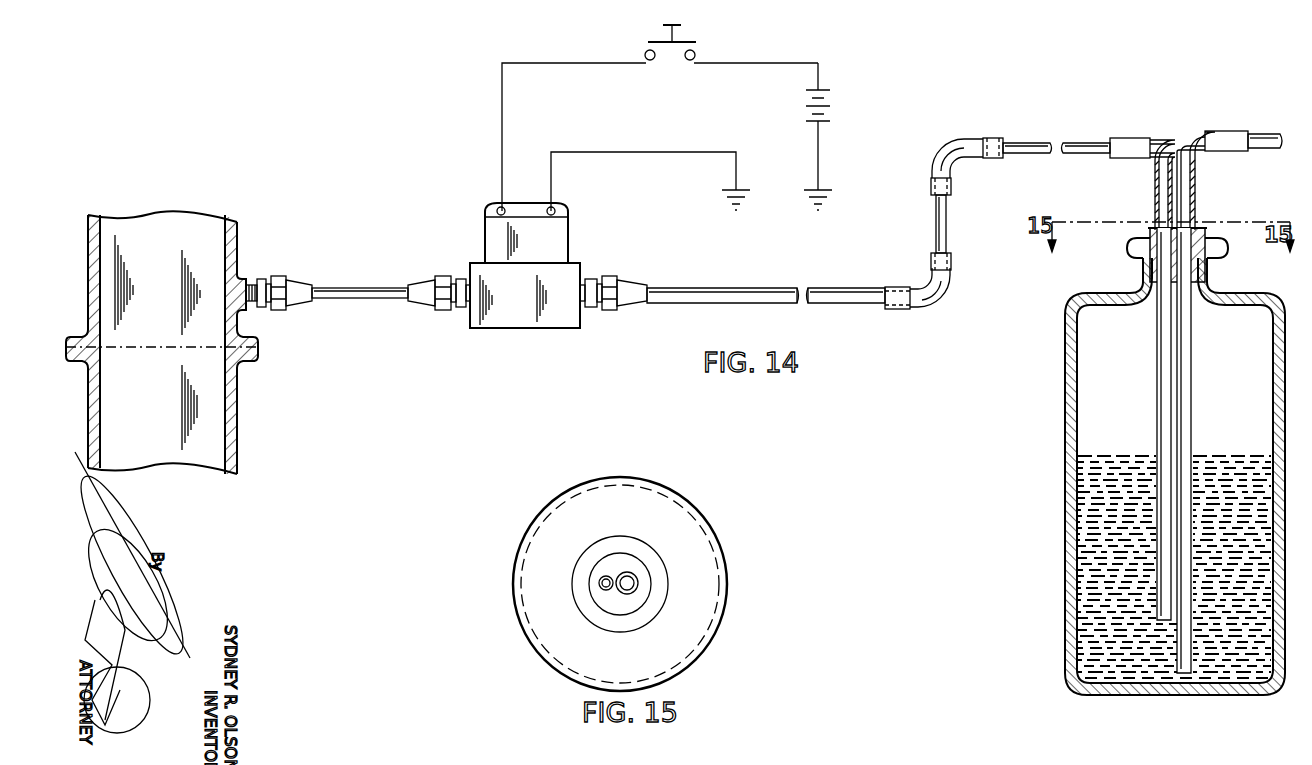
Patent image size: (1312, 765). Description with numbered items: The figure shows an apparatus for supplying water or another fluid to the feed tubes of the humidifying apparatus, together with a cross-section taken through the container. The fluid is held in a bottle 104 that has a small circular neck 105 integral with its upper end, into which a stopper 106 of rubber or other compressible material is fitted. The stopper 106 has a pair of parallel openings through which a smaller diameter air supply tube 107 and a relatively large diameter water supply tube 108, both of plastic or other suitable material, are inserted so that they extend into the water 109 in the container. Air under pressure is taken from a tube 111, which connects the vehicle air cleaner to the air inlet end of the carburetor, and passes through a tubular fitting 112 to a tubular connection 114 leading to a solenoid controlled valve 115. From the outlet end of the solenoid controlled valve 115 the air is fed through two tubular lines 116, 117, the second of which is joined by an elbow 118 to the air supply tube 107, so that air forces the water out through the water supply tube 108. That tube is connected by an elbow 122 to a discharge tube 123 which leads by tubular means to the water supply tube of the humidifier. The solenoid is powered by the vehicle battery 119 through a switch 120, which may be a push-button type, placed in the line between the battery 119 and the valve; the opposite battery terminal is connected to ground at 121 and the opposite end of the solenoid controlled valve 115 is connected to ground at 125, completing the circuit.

In FIG. 14, the bottle 104 is at (1068, 422).
In FIG. 15, the bottle 104 is at (710, 538).
In FIG. 14, the neck 105 is at (1207, 266).
In FIG. 15, the neck 105 is at (618, 548).
In FIG. 14, the stopper 106 is at (1150, 231).
In FIG. 15, the stopper 106 is at (615, 605).
In FIG. 14, the air supply tube 107 is at (1160, 350).
In FIG. 15, the air supply tube 107 is at (602, 585).
In FIG. 14, the water supply tube 108 is at (1180, 372).
In FIG. 15, the water supply tube 108 is at (640, 578).
In FIG. 14, the water 109 is at (1240, 663).
In FIG. 14, the tube 111 is at (238, 237).
In FIG. 14, the tubular fitting 112 is at (280, 279).
In FIG. 14, the tubular connection 114 is at (397, 302).
In FIG. 14, the solenoid controlled valve 115 is at (506, 330).
In FIG. 14, the tubular line 116 is at (752, 291).
In FIG. 14, the tubular line 117 is at (1031, 140).
In FIG. 14, the elbow 118 is at (1162, 142).
In FIG. 14, the battery 119 is at (831, 97).
In FIG. 14, the switch 120 is at (676, 36).
In FIG. 14, the ground 121 is at (826, 196).
In FIG. 14, the elbow 122 is at (1197, 131).
In FIG. 14, the discharge tube 123 is at (1268, 150).
In FIG. 14, the ground 125 is at (730, 197).